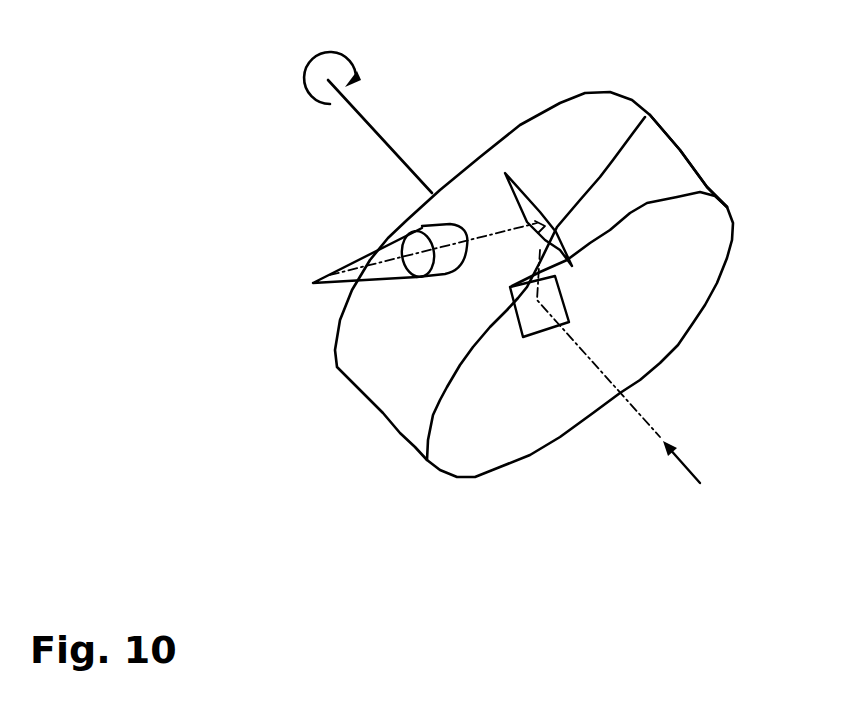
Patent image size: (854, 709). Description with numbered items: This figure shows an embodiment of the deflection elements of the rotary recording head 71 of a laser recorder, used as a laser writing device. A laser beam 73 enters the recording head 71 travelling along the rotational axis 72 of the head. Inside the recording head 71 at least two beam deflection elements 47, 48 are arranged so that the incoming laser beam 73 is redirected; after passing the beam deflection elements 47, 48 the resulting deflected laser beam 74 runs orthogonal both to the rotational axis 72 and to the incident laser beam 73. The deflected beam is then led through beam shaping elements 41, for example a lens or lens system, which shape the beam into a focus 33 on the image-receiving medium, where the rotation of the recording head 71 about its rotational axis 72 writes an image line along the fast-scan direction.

The focus 33 is at (313, 283).
The beam shaping elements 41 is at (440, 275).
The beam deflection element 47 is at (562, 290).
The beam deflection element 48 is at (650, 114).
The recording head 71 is at (668, 158).
The rotational axis 72 is at (381, 130).
The laser beam 73 is at (633, 407).
The deflected laser beam 74 is at (480, 230).